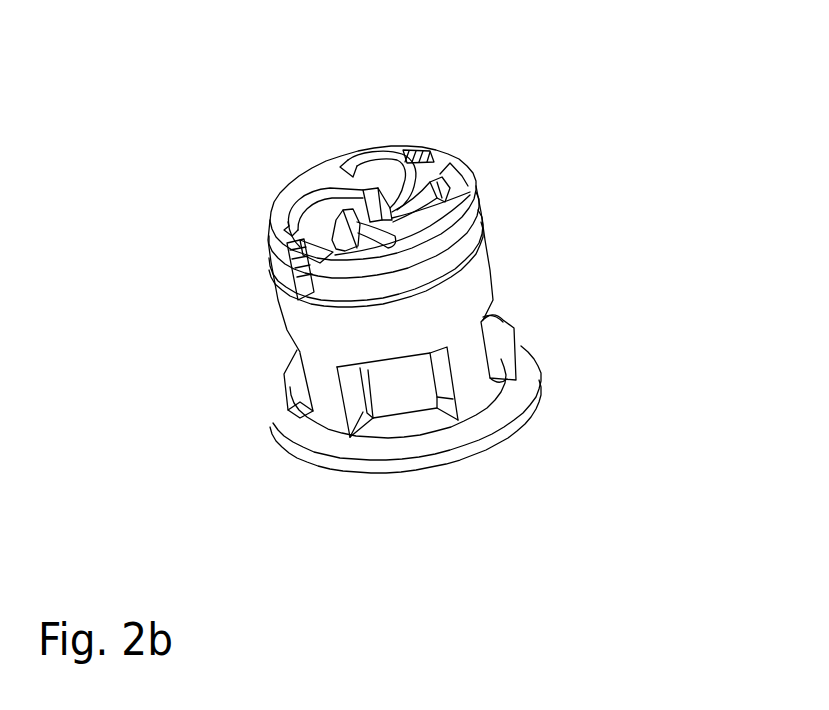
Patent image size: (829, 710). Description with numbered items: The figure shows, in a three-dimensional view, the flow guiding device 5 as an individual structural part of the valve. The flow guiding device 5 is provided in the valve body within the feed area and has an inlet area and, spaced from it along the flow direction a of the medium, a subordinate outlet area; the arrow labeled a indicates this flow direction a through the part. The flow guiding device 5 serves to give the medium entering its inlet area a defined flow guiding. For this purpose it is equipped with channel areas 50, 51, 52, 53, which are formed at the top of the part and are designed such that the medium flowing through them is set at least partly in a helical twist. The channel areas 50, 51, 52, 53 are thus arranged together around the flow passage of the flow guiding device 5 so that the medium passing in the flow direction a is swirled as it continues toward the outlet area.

The flow guiding device 5 is at (517, 209).
The channel area 50 is at (379, 176).
The channel area 51 is at (447, 185).
The channel area 52 is at (348, 242).
The channel area 53 is at (313, 208).
The flow direction a is at (335, 134).